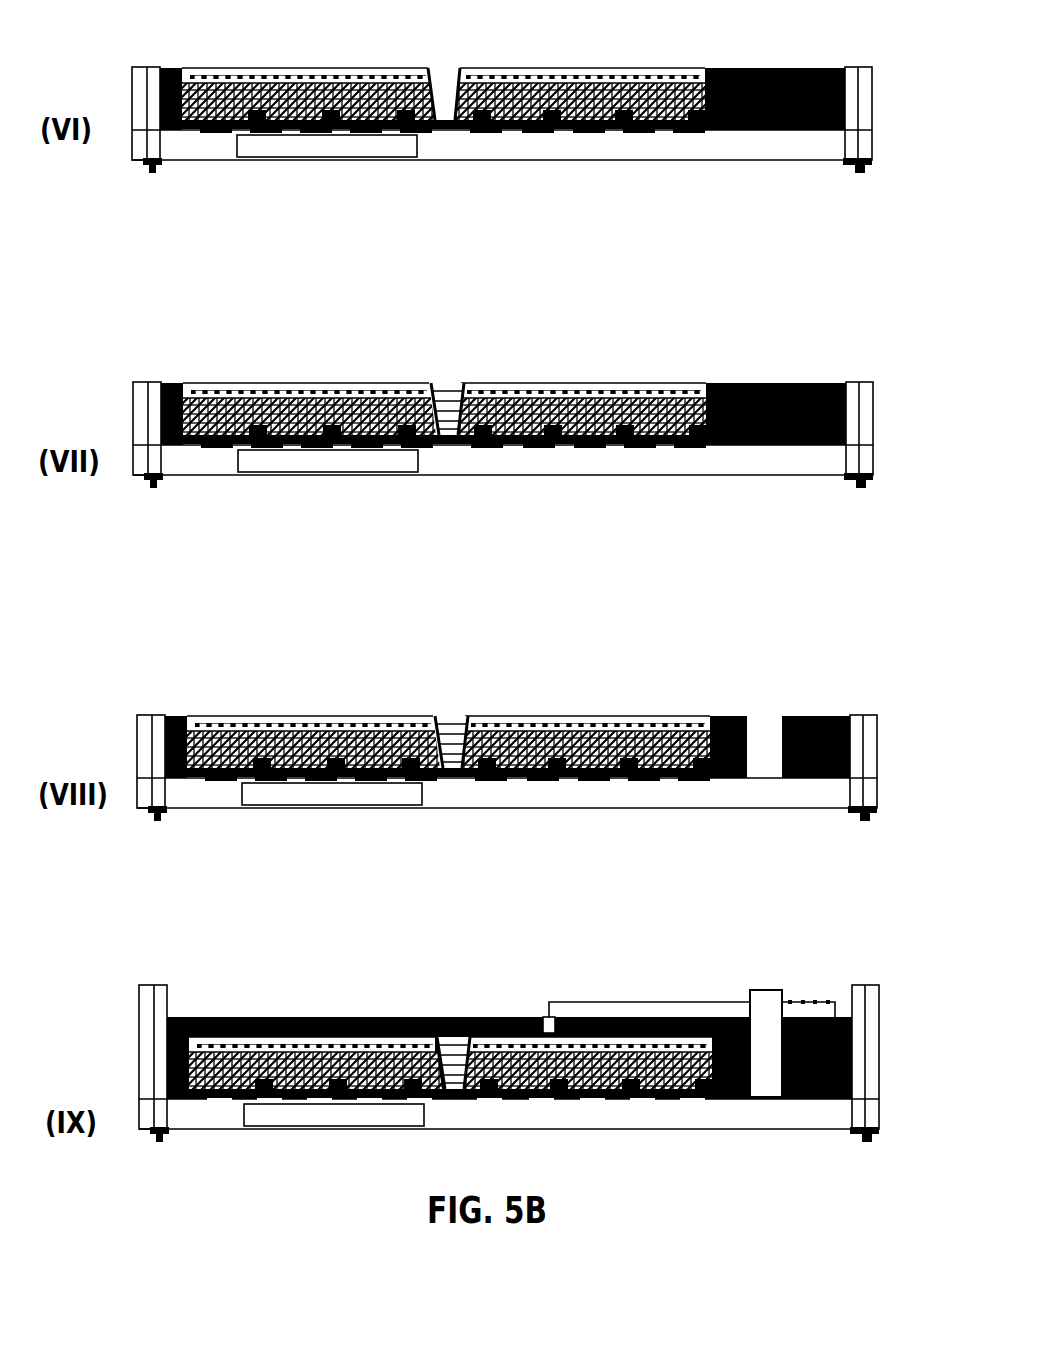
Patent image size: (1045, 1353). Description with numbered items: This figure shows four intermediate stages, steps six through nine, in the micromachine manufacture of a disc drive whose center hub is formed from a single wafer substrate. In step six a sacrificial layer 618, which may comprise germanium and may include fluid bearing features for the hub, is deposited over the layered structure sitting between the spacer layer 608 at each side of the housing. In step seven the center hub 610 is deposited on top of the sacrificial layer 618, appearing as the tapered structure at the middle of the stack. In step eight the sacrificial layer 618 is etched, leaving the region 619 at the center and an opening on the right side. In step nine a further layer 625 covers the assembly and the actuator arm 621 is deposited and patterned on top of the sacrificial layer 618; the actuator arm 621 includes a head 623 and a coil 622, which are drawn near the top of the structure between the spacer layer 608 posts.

The sacrificial layer 618 is at (173, 68).
The center hub 610 is at (426, 391).
The singulated device stacks 619 is at (448, 713).
The encapsulant layer 625 is at (509, 1017).
The spacer layer 608 is at (517, 1057).
The actuator arm 621 is at (698, 1016).
The coil 622 is at (813, 987).
The head 623 is at (620, 1001).